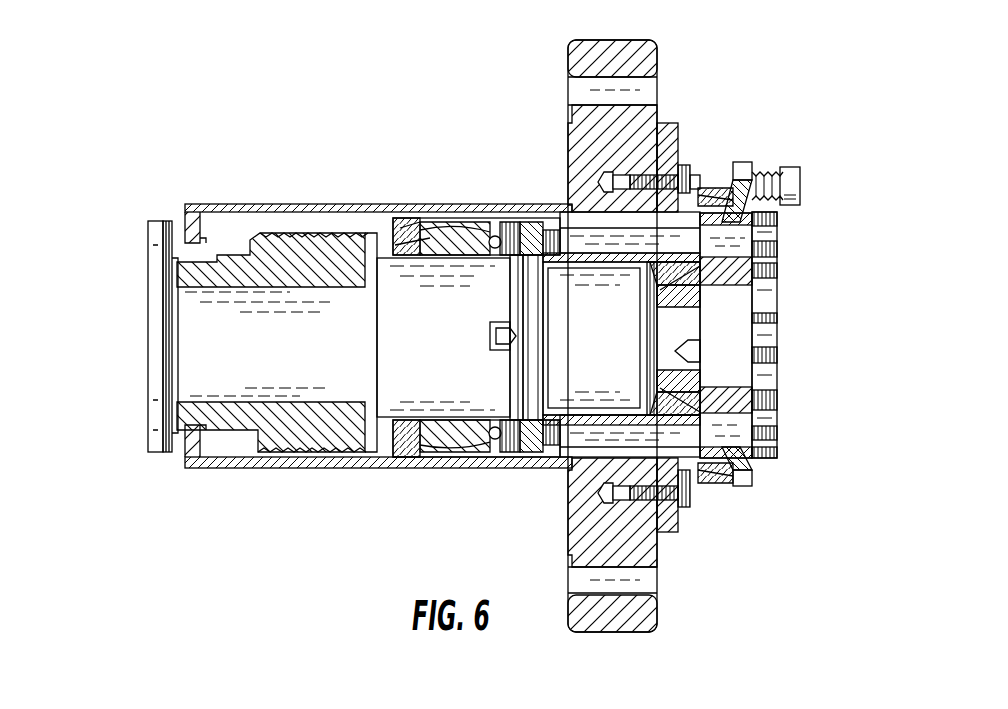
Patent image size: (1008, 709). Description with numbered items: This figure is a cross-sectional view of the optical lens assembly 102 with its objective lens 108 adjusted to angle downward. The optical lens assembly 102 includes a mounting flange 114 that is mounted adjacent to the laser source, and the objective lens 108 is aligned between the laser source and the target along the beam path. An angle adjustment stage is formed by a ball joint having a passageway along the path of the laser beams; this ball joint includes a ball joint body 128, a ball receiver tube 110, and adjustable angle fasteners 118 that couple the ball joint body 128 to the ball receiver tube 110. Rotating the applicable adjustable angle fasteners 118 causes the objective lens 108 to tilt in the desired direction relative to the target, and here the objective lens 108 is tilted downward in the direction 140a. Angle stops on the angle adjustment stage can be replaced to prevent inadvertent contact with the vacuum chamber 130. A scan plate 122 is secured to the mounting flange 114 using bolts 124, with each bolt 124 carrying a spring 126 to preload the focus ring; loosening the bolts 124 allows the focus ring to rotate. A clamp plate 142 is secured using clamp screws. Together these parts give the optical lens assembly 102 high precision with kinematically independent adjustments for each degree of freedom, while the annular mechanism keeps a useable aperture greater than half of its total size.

The optical lens assembly 102 is at (262, 108).
The objective lens 108 is at (243, 360).
The ball receiver tube 110 is at (440, 230).
The mounting flange 114 is at (671, 140).
The adjustable angle fasteners 118 is at (548, 238).
The scan plate 122 is at (740, 160).
The bolts 124 is at (800, 178).
The spring 126 is at (770, 168).
The ball joint body 128 is at (430, 432).
The vacuum chamber 130 is at (643, 60).
The direction 140a is at (120, 362).
The clamp plate 142 is at (688, 168).